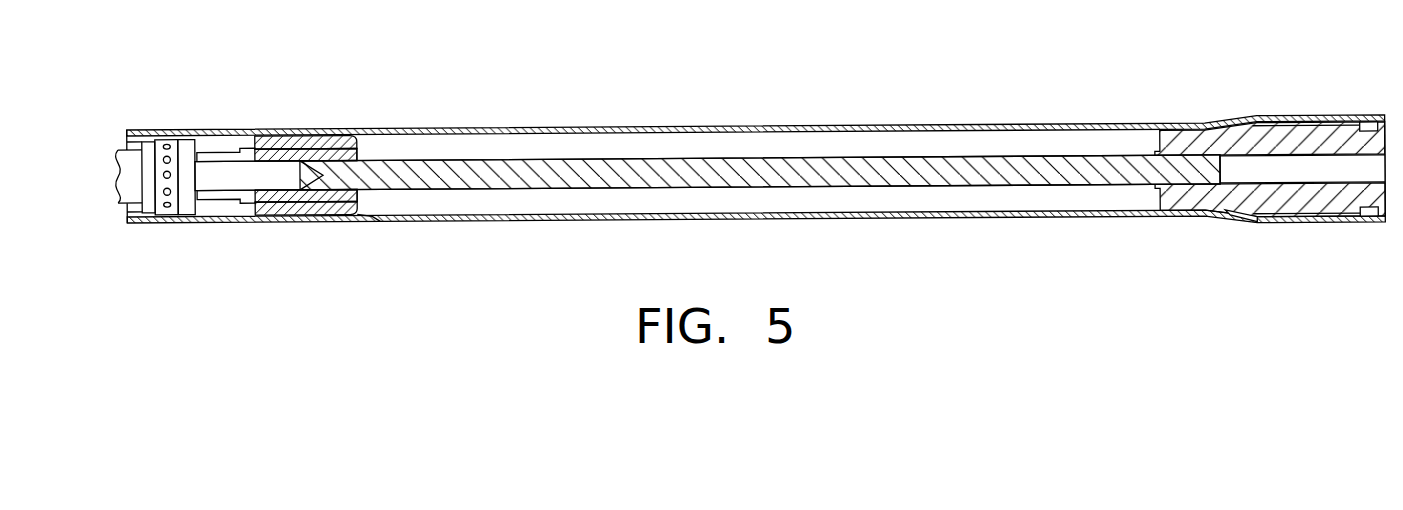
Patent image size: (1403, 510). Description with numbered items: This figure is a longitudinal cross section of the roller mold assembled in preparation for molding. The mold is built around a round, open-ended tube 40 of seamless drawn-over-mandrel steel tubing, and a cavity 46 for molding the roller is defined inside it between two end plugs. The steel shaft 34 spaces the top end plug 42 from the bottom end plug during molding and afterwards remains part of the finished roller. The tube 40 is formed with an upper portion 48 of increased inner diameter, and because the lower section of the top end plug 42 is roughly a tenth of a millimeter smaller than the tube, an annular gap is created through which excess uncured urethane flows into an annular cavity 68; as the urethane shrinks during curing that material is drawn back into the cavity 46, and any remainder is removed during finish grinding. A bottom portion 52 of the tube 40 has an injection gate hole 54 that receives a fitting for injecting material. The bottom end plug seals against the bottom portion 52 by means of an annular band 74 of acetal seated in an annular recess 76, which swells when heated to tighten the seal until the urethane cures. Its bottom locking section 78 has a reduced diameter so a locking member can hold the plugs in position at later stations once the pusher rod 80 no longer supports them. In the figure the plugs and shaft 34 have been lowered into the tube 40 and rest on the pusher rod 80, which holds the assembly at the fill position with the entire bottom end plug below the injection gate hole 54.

The tube 40 is at (765, 72).
The cavity 46 is at (693, 135).
The steel shaft 34 is at (1052, 188).
The top end plug 42 is at (1282, 133).
The upper portion 48 is at (1210, 108).
The bottom portion 52 is at (258, 118).
The injection gate hole 54 is at (370, 220).
The annular cavity 68 is at (1243, 212).
The annular band 74 is at (316, 140).
The annular recess 76 is at (337, 148).
The bottom locking section 78 is at (217, 152).
The pusher rod 80 is at (135, 218).